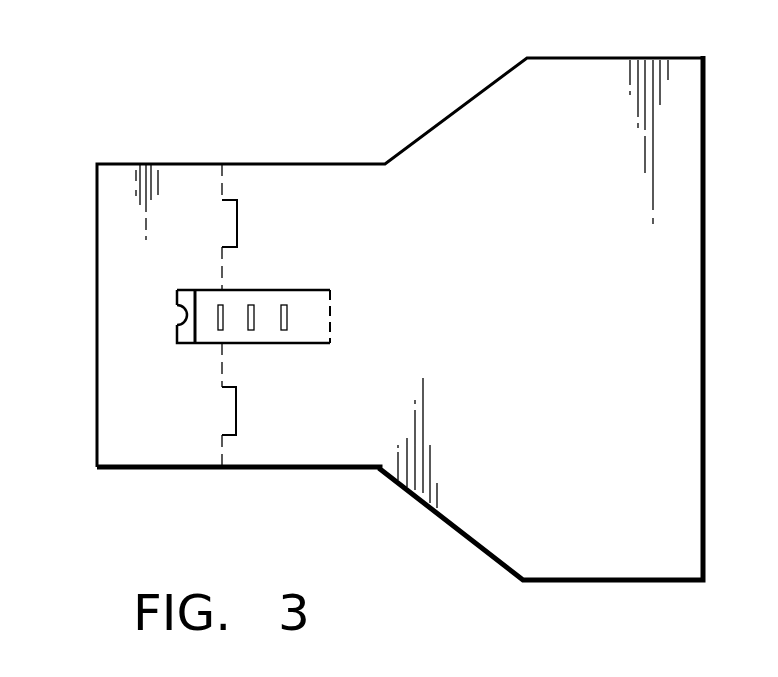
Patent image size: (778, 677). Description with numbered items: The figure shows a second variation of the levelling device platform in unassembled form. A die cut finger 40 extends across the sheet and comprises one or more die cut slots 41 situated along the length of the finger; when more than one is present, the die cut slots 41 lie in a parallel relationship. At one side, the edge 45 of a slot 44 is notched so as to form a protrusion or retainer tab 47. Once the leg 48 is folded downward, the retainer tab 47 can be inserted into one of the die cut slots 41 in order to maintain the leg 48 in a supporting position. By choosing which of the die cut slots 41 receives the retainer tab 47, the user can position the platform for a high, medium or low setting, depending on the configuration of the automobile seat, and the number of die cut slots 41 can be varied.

The die cut finger 40 is at (270, 335).
The die cut slots 41 is at (251, 305).
The slot 44 is at (185, 335).
The edge 45 is at (177, 295).
The retainer tab 47 is at (175, 314).
The leg 48 is at (120, 438).